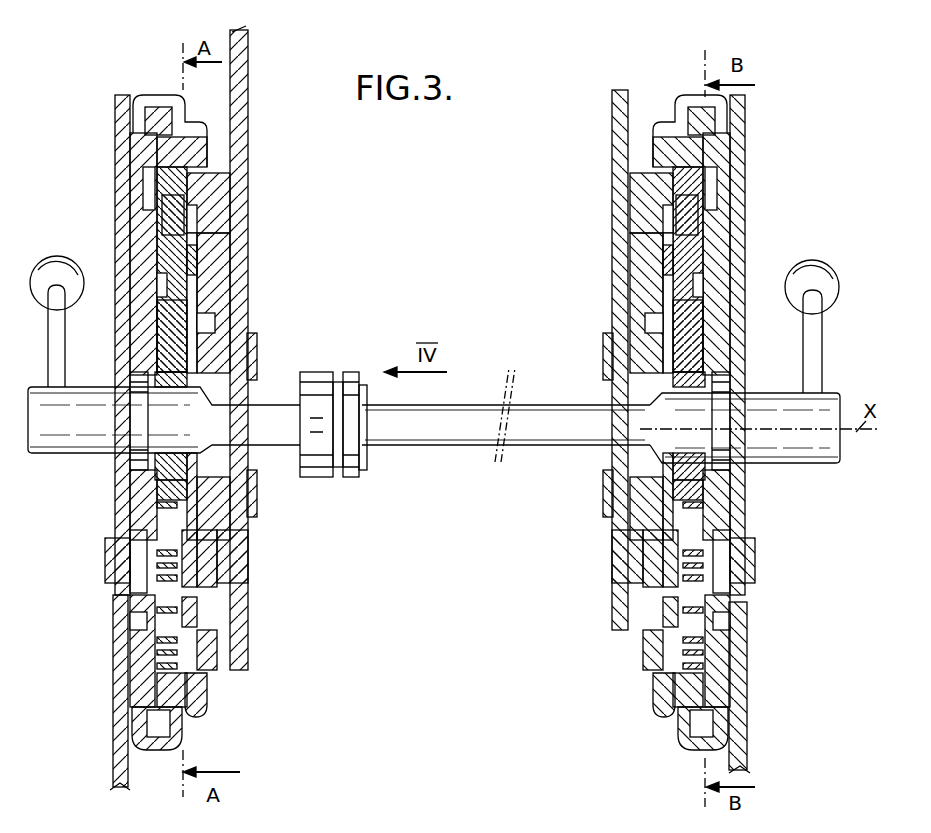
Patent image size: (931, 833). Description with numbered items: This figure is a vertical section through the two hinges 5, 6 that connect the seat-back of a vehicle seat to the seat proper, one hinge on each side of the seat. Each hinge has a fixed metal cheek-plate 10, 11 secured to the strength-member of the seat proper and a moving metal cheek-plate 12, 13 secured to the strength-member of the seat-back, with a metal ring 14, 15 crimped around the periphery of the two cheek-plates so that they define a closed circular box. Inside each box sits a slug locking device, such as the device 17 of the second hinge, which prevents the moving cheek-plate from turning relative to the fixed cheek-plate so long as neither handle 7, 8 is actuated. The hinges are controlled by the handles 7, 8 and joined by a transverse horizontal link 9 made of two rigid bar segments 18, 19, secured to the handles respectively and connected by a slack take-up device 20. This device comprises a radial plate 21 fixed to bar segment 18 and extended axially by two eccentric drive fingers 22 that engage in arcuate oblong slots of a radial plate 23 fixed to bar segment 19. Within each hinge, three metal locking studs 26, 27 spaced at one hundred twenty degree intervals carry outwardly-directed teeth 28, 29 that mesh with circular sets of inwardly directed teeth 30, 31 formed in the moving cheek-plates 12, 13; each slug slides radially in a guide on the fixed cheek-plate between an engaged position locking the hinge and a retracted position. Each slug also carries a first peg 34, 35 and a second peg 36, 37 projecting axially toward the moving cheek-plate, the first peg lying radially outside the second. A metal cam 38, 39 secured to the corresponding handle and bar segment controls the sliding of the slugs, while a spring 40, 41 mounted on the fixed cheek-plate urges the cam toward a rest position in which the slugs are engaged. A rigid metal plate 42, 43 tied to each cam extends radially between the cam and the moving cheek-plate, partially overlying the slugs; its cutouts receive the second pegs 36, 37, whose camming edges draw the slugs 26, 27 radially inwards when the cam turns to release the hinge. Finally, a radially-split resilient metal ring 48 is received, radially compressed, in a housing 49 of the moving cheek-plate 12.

The first hinge 5 is at (185, 405).
The second hinge 6 is at (666, 412).
The handle 7 is at (57, 358).
The handle 8 is at (813, 344).
The link 9 is at (453, 393).
The fixed cheek-plate 10 is at (120, 183).
The fixed cheek-plate 11 is at (747, 199).
The moving cheek-plate 12 is at (203, 189).
The moving cheek-plate 13 is at (648, 184).
The metal ring 14 is at (157, 97).
The metal ring 15 is at (693, 106).
The slug locking device 17 is at (683, 600).
The bar segment 18 is at (263, 428).
The bar segment 19 is at (461, 420).
The slack take-up device 20 is at (367, 409).
The radial plate 21 is at (322, 474).
The eccentric drive fingers 22 is at (362, 392).
The radial plate 23 is at (360, 476).
The locking studs 26 is at (163, 257).
The locking studs 27 is at (700, 260).
The outwardly-directed teeth 28 is at (207, 150).
The outwardly-directed teeth 29 is at (737, 162).
The inwardly directed teeth 30 is at (198, 712).
The inwardly directed teeth 31 is at (690, 676).
The first peg 34 is at (197, 219).
The first peg 35 is at (640, 212).
The second peg 36 is at (192, 287).
The second peg 37 is at (672, 288).
The cam 38 is at (167, 350).
The cam 39 is at (690, 360).
The spring 40 is at (157, 563).
The spring 41 is at (693, 588).
The rigid metal plate 42 is at (197, 260).
The rigid metal plate 43 is at (627, 239).
The radially-split resilient metal ring 48 is at (203, 214).
The housing 49 is at (202, 625).